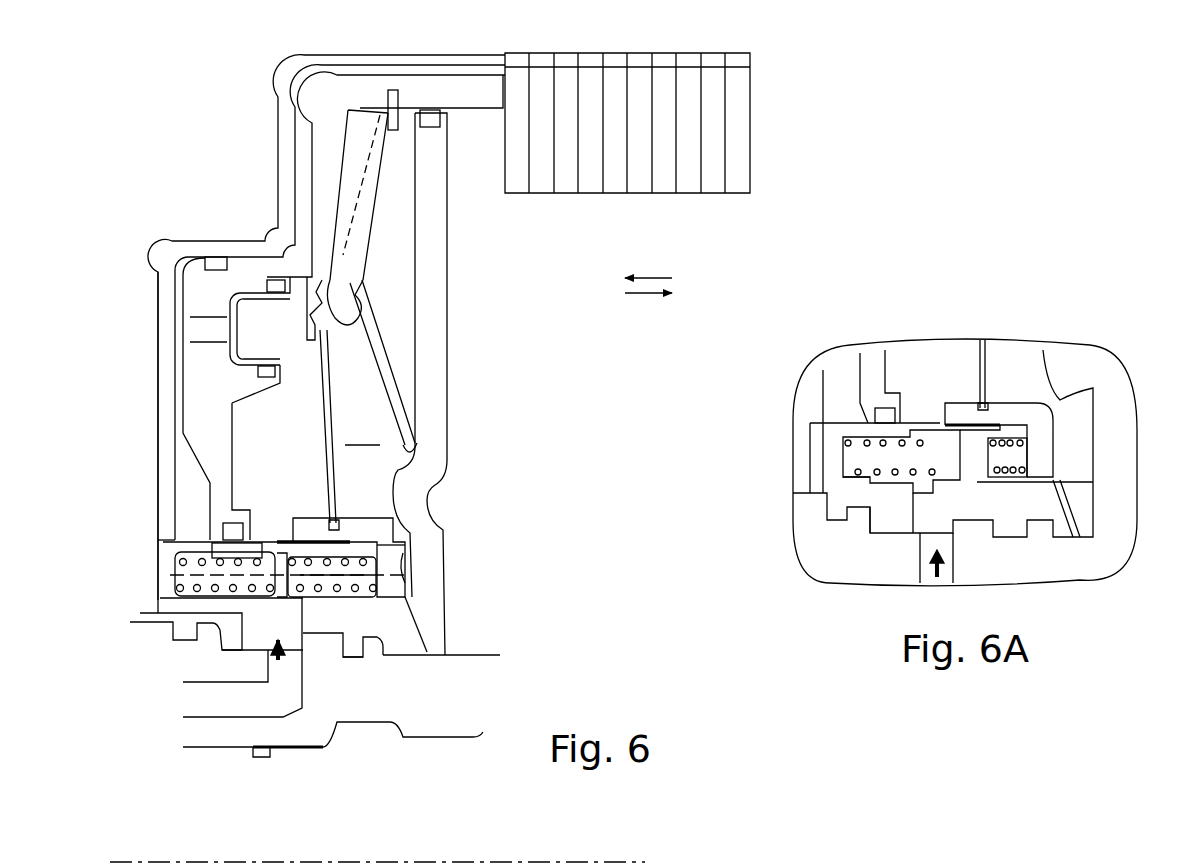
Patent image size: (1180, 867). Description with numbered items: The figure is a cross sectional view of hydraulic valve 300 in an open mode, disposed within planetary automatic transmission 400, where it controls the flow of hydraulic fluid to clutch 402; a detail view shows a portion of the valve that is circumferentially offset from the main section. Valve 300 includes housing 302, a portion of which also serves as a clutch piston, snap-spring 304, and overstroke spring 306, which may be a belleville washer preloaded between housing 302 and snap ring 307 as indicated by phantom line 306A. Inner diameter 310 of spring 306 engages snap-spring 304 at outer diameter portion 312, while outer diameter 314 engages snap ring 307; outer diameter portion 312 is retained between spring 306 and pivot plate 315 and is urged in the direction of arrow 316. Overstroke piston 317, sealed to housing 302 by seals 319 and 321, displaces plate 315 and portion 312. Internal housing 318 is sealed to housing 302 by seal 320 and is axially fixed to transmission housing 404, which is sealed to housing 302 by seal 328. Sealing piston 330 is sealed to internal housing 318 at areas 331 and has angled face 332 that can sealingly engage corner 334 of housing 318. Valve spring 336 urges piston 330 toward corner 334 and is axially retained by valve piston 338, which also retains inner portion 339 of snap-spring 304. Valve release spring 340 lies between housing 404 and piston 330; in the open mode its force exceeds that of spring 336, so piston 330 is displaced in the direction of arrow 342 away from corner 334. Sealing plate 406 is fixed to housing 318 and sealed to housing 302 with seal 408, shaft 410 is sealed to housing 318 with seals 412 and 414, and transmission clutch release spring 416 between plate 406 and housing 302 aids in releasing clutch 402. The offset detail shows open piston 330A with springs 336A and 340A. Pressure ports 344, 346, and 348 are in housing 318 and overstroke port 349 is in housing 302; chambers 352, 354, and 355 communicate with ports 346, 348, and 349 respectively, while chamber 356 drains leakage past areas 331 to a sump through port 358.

In FIG. 6, the hydraulic valve 300 is at (273, 402).
In FIG. 6, the housing 302 is at (240, 380).
In FIG. 6, the snap-spring 304 is at (320, 417).
In FIG. 6A, the snap-spring 304 is at (990, 360).
In FIG. 6, the overstroke spring 306 is at (370, 137).
In FIG. 6, the phantom line 306A is at (342, 223).
In FIG. 6, the snap ring 307 is at (388, 97).
In FIG. 6, the inner diameter 310 is at (380, 293).
In FIG. 6, the outer diameter portion 312 is at (380, 360).
In FIG. 6, the outer diameter 314 is at (390, 140).
In FIG. 6, the pivot plate 315 is at (277, 282).
In FIG. 6, the arrow 316 is at (647, 278).
In FIG. 6, the overstroke piston 317 is at (215, 258).
In FIG. 6, the internal housing 318 is at (237, 607).
In FIG. 6, the seal 319 is at (263, 272).
In FIG. 6, the seal 320 is at (230, 527).
In FIG. 6, the seal 321 is at (228, 320).
In FIG. 6, the seal 328 is at (170, 240).
In FIG. 6, the sealing piston 330 is at (275, 592).
In FIG. 6A, the open piston 330A is at (973, 445).
In FIG. 6, the sealed areas 331 is at (323, 557).
In FIG. 6, the angled face 332 is at (285, 545).
In FIG. 6, the corner 334 is at (258, 557).
In FIG. 6, the valve spring 336 is at (367, 560).
In FIG. 6A, the spring 336A is at (1005, 473).
In FIG. 6, the valve piston 338 is at (387, 530).
In FIG. 6A, the valve piston 338 is at (1037, 410).
In FIG. 6, the inner portion 339 is at (380, 487).
In FIG. 6, the valve release spring 340 is at (200, 593).
In FIG. 6A, the spring 340A is at (857, 477).
In FIG. 6, the arrow 342 is at (647, 293).
In FIG. 6, the pressure port 344 is at (278, 618).
In FIG. 6A, the pressure port 346 is at (925, 503).
In FIG. 6, the pressure port 348 is at (203, 583).
In FIG. 6, the overstroke port 349 is at (202, 333).
In FIG. 6A, the pressure chamber 352 is at (890, 457).
In FIG. 6, the pressure chamber 354 is at (187, 477).
In FIG. 6, the pressure chamber 355 is at (222, 300).
In FIG. 6, the chamber 356 is at (362, 433).
In FIG. 6, the port 358 is at (428, 645).
In FIG. 6, the transmission 400 is at (150, 135).
In FIG. 6, the clutch 402 is at (713, 102).
In FIG. 6, the transmission housing 404 is at (163, 553).
In FIG. 6, the sealing plate 406 is at (423, 260).
In FIG. 6, the seal 408 is at (437, 117).
In FIG. 6, the shaft 410 is at (440, 697).
In FIG. 6, the seal 412 is at (358, 655).
In FIG. 6, the seal 414 is at (187, 633).
In FIG. 6, the transmission clutch release spring 416 is at (380, 340).